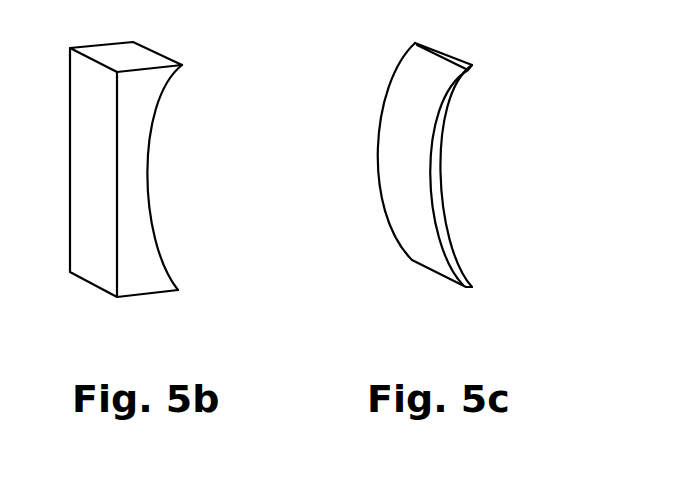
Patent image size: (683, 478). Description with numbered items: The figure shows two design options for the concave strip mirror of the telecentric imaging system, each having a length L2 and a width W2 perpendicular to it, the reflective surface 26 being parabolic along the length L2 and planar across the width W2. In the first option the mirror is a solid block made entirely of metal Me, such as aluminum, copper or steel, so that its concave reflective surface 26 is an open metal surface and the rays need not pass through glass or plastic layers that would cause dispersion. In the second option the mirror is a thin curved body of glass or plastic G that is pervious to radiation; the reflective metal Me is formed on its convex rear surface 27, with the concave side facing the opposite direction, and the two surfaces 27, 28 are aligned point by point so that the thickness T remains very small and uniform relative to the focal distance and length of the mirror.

In FIG. 5B, the reflective surface 26 is at (155, 195).
In FIG. 5C, the reflective surface 26 is at (432, 215).
In FIG. 5C, the convex rear surface 27 is at (422, 242).
In FIG. 5C, the surface 28 is at (461, 264).
In FIG. 5B, the reflective metal Me is at (111, 185).
In FIG. 5C, the reflective metal Me is at (417, 80).
In FIG. 5C, the glass or plastic G is at (438, 135).
In FIG. 5C, the thickness T is at (390, 177).
In FIG. 5B, the mirror length L2 is at (47, 47).
In FIG. 5C, the mirror length L2 is at (339, 272).
In FIG. 5B, the width W2 is at (198, 55).
In FIG. 5C, the width W2 is at (492, 55).